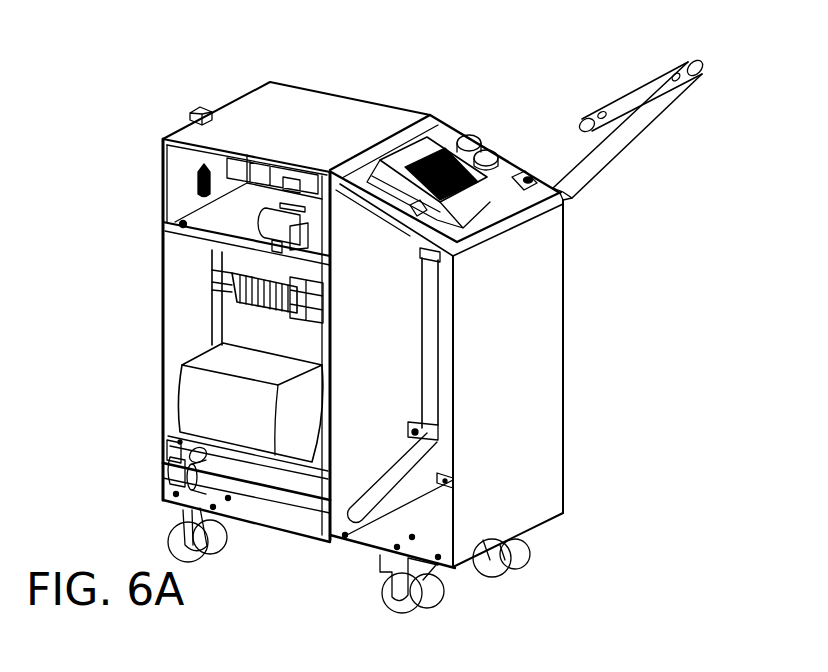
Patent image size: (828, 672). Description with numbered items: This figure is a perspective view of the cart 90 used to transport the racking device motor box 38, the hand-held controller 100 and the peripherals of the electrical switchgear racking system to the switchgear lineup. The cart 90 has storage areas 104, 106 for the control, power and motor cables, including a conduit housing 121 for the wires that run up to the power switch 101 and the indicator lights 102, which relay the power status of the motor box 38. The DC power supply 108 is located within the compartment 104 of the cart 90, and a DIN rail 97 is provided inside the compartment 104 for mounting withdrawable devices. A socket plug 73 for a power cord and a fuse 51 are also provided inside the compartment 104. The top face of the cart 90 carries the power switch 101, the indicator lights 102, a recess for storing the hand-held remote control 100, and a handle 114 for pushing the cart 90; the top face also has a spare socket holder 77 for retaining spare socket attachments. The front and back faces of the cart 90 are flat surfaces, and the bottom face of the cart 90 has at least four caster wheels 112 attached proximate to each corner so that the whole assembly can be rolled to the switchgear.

The racking device motor box 38 is at (295, 108).
The hand-held controller 100 is at (420, 165).
The power switch 101 is at (474, 135).
The indicator lights 102 is at (490, 148).
The handle 114 is at (648, 112).
The spare socket holder 77 is at (570, 197).
The cart 90 is at (567, 288).
The DIN rail 97 is at (215, 273).
The compartment 104 is at (197, 328).
The DC power supply 108 is at (218, 402).
The fuse 51 is at (172, 447).
The socket plug 73 is at (165, 468).
The storage area 106 is at (380, 323).
The conduit housing 121 is at (430, 385).
The caster wheels 112 is at (202, 557).